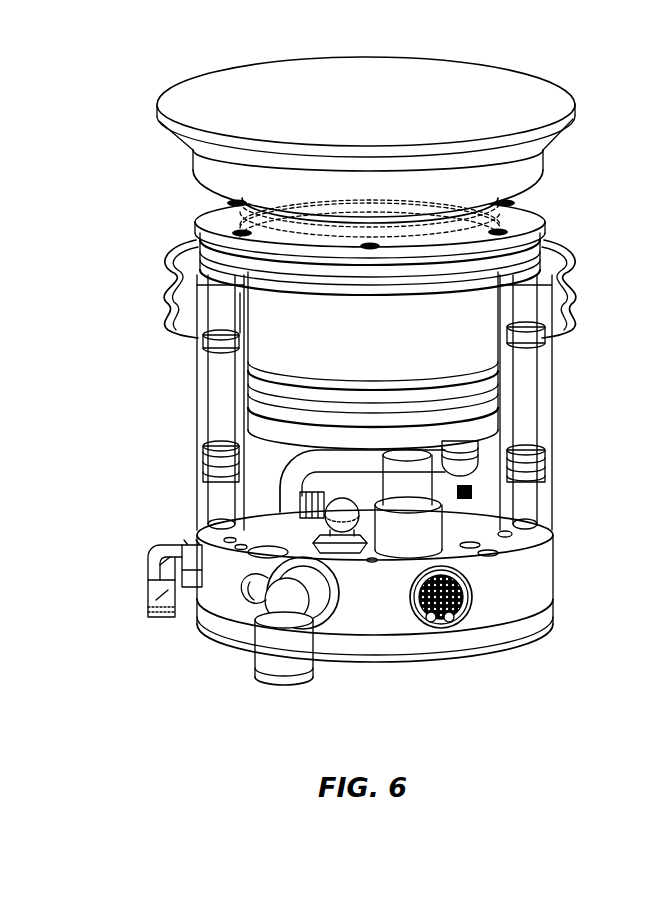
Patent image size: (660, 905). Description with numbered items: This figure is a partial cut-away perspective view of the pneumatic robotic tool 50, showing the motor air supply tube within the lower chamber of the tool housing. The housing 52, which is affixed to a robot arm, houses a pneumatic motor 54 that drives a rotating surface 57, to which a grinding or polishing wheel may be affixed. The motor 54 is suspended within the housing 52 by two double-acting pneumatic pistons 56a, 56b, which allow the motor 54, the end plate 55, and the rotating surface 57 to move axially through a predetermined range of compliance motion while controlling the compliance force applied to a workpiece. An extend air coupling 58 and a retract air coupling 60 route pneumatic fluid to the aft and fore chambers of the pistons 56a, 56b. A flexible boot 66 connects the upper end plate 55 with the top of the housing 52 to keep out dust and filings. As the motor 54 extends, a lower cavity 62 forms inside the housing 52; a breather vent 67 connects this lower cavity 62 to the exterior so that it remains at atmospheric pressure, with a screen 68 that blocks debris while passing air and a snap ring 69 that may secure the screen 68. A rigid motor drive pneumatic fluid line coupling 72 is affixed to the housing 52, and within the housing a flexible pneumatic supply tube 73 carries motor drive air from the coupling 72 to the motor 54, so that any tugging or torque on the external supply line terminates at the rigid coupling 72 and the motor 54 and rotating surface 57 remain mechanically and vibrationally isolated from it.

The pneumatic robotic tool 50 is at (97, 288).
The housing 52 is at (196, 370).
The pneumatic motor 54 is at (462, 318).
The end plate 55 is at (522, 215).
The double-acting pneumatic piston 56a is at (222, 410).
The double-acting pneumatic piston 56b is at (527, 418).
The rotating surface 57 is at (527, 94).
The extend air coupling 58 is at (168, 598).
The retract air coupling 60 is at (175, 543).
The lower cavity 62 is at (290, 458).
The flexible boot 66 is at (578, 290).
The breather vent 67 is at (474, 620).
The screen 68 is at (450, 622).
The snap ring 69 is at (468, 590).
The rigid motor drive pneumatic fluid line coupling 72 is at (284, 608).
The flexible pneumatic supply tube 73 is at (302, 455).